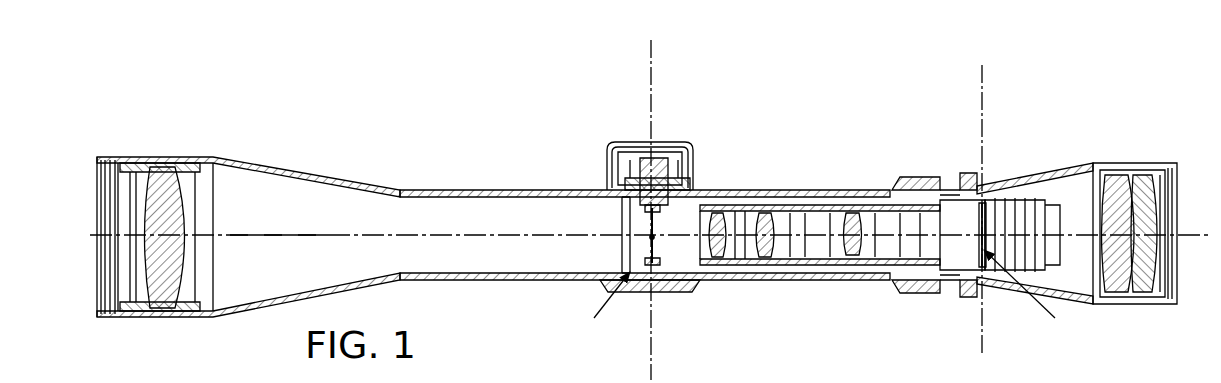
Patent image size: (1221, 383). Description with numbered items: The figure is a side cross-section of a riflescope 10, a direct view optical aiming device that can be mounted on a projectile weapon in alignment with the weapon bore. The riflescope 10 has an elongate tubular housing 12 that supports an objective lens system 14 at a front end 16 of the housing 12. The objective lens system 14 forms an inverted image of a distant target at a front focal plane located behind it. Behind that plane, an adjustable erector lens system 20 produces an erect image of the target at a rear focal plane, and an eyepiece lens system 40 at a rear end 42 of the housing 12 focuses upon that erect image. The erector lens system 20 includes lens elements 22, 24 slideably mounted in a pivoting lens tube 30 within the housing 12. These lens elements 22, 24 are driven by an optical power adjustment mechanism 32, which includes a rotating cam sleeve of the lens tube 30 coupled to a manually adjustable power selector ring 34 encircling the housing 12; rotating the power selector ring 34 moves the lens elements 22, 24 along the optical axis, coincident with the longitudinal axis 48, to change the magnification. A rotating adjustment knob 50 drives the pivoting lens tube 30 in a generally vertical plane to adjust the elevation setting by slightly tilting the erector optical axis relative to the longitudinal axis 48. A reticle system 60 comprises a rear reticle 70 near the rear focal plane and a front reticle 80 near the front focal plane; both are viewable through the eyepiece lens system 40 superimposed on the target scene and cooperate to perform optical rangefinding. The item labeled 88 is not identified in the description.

The riflescope 10 is at (1076, 86).
The elongate tubular housing 12 is at (460, 190).
The objective lens system 14 is at (165, 173).
The front end 16 is at (113, 163).
The erector lens system 20 is at (863, 130).
The lens element 22 is at (765, 211).
The lens element 24 is at (850, 211).
The pivoting lens tube 30 is at (824, 267).
The optical power adjustment mechanism 32 is at (893, 308).
The power selector ring 34 is at (931, 289).
The eyepiece lens system 40 is at (1141, 150).
The rear end 42 is at (995, 185).
The longitudinal axis 48 is at (284, 236).
The adjustment knob 50 is at (613, 158).
The reticle system 60 is at (925, 118).
The rear reticle 70 is at (979, 222).
The front reticle 80 is at (657, 222).
The reticle center point 88 is at (654, 238).